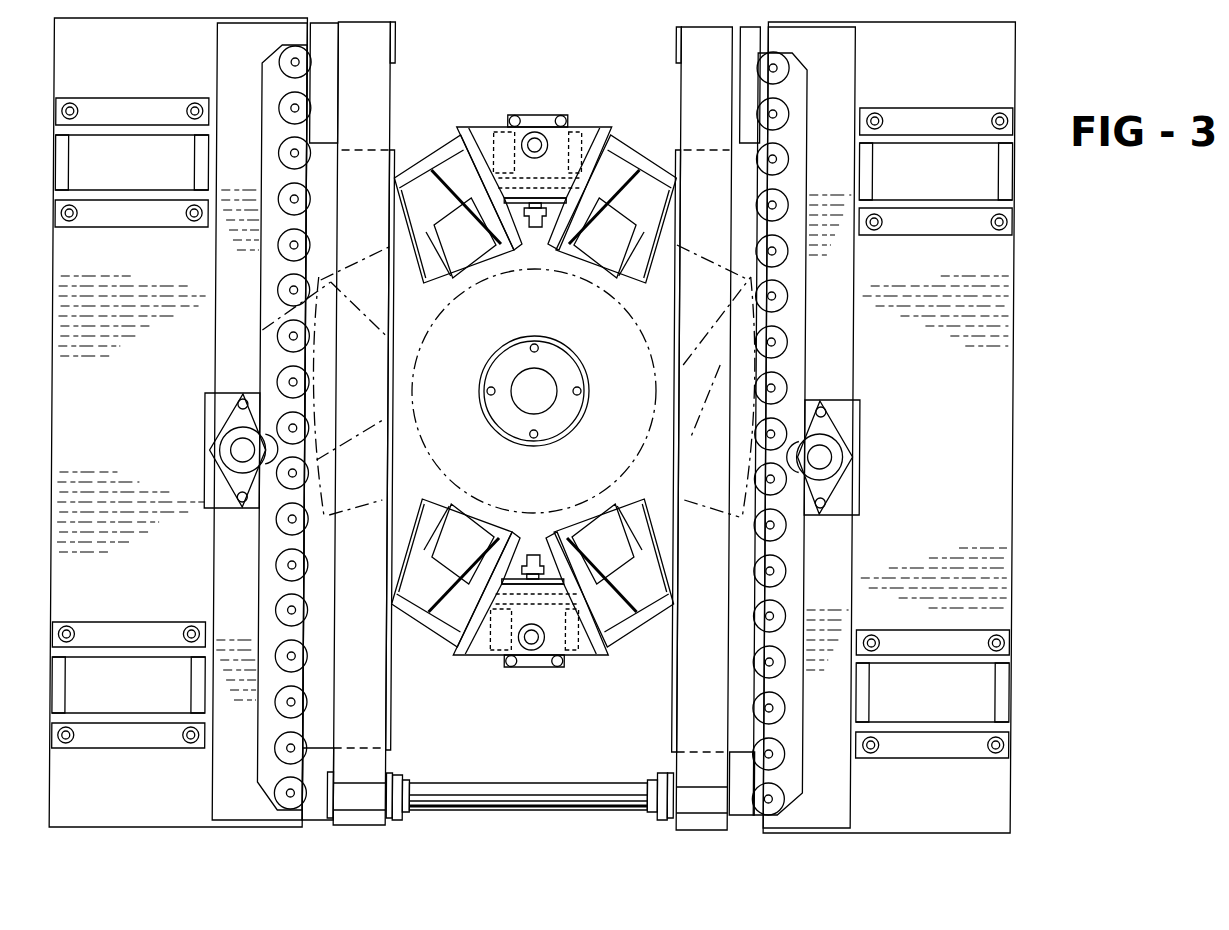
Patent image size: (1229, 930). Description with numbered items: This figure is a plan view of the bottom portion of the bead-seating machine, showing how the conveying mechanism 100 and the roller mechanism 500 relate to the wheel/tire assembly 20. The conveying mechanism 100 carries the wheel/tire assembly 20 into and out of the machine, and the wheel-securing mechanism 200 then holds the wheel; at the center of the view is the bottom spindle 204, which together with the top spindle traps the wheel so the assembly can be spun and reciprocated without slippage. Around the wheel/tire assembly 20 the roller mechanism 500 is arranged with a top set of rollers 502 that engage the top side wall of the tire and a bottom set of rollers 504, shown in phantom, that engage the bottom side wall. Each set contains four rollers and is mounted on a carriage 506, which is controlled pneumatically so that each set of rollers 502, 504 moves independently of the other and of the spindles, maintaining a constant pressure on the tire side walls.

The wheel/tire assembly 20 is at (696, 242).
The conveying mechanism 100 is at (392, 836).
The wheel-securing mechanism 200 is at (532, 397).
The bottom spindle 204 is at (486, 432).
The roller mechanism 500 is at (441, 166).
The top set of rollers 502 is at (455, 280).
The bottom set of rollers 504 is at (264, 331).
The carriage 506 is at (474, 126).